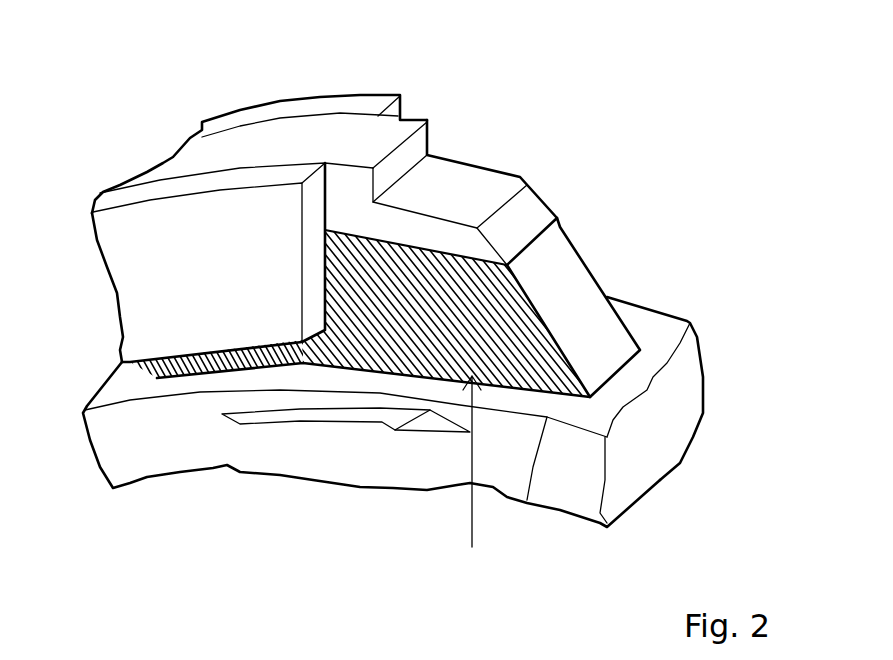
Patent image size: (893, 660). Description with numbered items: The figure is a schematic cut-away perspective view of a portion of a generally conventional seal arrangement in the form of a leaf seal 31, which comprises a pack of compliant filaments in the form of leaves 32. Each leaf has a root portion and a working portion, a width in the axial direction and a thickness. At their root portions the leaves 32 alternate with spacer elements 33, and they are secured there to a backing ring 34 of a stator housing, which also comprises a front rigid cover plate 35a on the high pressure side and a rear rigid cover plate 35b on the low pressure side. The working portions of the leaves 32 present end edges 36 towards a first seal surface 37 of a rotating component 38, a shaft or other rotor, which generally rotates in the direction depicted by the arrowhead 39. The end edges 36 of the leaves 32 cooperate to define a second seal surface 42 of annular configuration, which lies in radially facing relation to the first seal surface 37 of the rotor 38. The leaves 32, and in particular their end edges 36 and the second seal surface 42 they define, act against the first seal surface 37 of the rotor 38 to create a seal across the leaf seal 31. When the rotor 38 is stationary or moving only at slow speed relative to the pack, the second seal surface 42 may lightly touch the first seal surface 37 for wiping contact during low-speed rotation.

The leaf seal 31 is at (466, 125).
The leaves 32 is at (570, 270).
The spacer elements 33 is at (517, 172).
The backing ring 34 is at (205, 143).
The front rigid cover plate 35a is at (150, 275).
The rear rigid cover plate 35b is at (303, 98).
The end edges 36 is at (623, 365).
The first seal surface 37 is at (527, 500).
The rotating component 38 is at (117, 453).
The arrowhead 39 is at (333, 423).
The second seal surface 42 is at (469, 484).